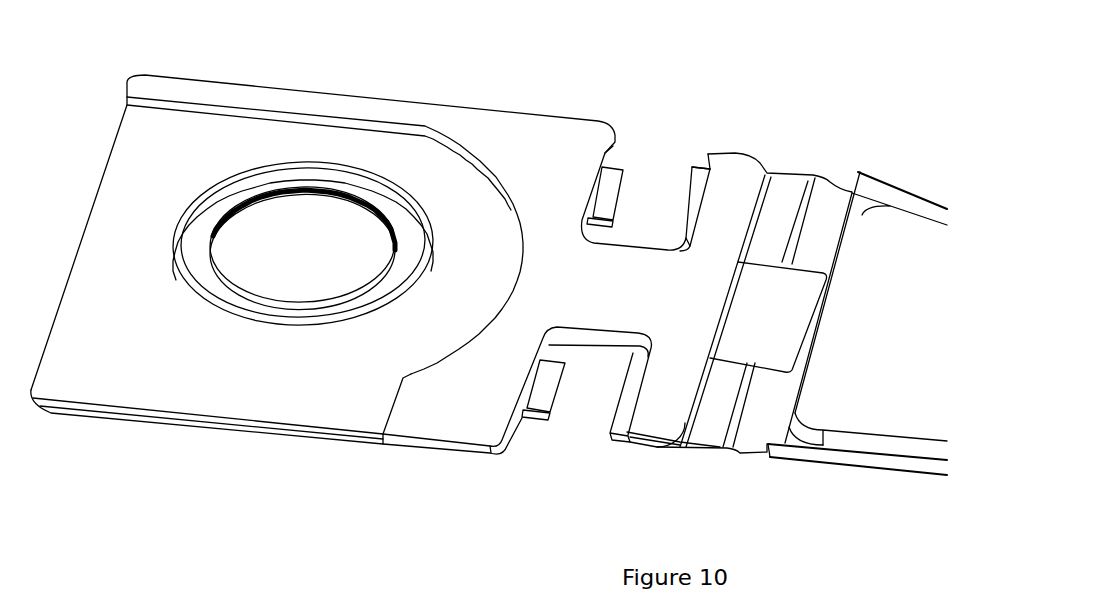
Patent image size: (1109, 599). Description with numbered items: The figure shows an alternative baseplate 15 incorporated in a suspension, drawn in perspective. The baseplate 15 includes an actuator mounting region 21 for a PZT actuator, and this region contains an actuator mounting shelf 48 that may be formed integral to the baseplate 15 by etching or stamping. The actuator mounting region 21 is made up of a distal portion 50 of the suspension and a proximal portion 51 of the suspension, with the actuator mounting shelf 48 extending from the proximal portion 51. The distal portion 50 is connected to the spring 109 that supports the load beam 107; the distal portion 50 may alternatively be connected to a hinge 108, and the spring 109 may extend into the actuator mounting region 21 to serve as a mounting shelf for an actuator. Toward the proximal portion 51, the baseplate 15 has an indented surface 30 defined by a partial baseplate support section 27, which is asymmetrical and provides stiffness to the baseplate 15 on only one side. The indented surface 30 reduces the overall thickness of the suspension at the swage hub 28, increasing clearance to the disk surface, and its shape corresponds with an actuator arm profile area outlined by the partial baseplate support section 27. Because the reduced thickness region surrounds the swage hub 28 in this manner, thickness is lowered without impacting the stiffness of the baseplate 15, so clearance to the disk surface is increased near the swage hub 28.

The baseplate 15 is at (93, 142).
The actuator mounting region 21 is at (589, 393).
The partial baseplate support section 27 is at (423, 384).
The swage hub 28 is at (400, 172).
The indented surface 30 is at (90, 326).
The actuator mounting shelf 48 is at (613, 185).
The distal portion 50 is at (658, 428).
The proximal portion 51 is at (467, 431).
The load beam 107 is at (846, 471).
The hinge 108 is at (798, 193).
The spring 109 is at (706, 175).